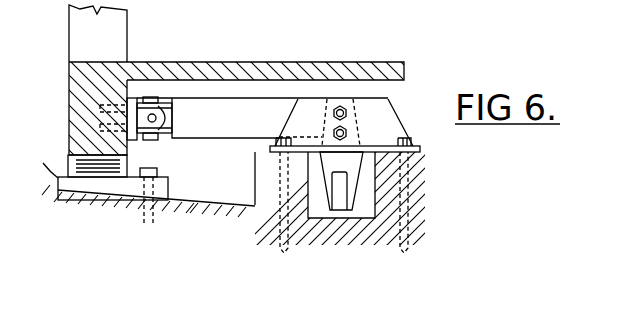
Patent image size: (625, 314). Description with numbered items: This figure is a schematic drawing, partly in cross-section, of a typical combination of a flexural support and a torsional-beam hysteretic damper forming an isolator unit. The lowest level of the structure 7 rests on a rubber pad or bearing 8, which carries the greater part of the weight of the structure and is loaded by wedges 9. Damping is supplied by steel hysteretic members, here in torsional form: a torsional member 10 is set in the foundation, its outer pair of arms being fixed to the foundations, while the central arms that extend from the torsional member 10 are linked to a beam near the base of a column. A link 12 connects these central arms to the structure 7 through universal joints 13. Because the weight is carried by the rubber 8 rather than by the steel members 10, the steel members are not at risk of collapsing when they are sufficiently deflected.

The structure 7 is at (84, 108).
The rubber pad or bearing 8 is at (105, 168).
The wedges 9 is at (122, 190).
The torsional member 10 is at (340, 200).
The link 12 is at (243, 129).
The universal joints 13 is at (340, 98).